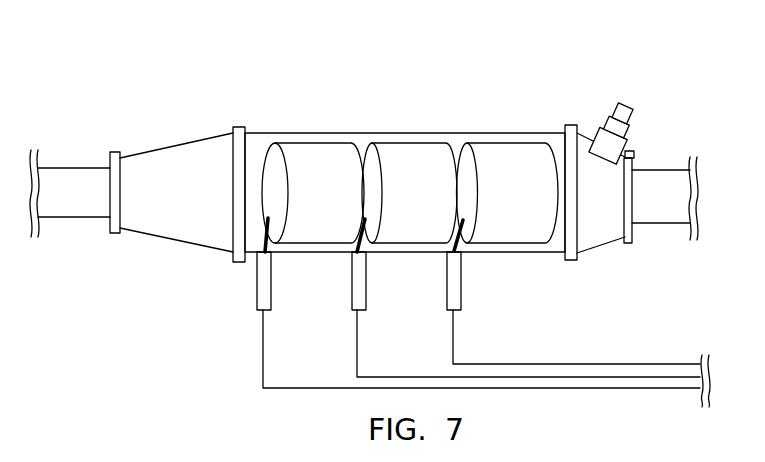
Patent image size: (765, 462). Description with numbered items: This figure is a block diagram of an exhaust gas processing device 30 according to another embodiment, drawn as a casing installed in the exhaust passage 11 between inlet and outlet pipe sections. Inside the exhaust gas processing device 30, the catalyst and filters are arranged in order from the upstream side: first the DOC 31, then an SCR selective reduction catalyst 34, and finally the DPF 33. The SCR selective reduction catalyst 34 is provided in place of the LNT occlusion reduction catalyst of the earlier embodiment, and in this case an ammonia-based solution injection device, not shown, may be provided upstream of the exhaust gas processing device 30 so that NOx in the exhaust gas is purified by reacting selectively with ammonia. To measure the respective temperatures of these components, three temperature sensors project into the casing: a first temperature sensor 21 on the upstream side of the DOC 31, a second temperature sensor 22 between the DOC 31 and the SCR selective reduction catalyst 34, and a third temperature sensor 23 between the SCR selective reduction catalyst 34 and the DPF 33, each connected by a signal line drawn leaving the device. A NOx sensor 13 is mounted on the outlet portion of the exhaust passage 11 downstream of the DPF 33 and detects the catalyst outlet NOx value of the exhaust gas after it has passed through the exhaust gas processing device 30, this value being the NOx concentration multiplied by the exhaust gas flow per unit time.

The exhaust passage 11 is at (657, 223).
The NOx sensor 13 is at (620, 108).
The first temperature sensor 21 is at (272, 280).
The second temperature sensor 22 is at (366, 277).
The third temperature sensor 23 is at (462, 275).
The exhaust gas processing device 30 is at (450, 133).
The DOC 31 is at (312, 142).
The DPF 33 is at (503, 143).
The SCR selective reduction catalyst 34 is at (390, 143).